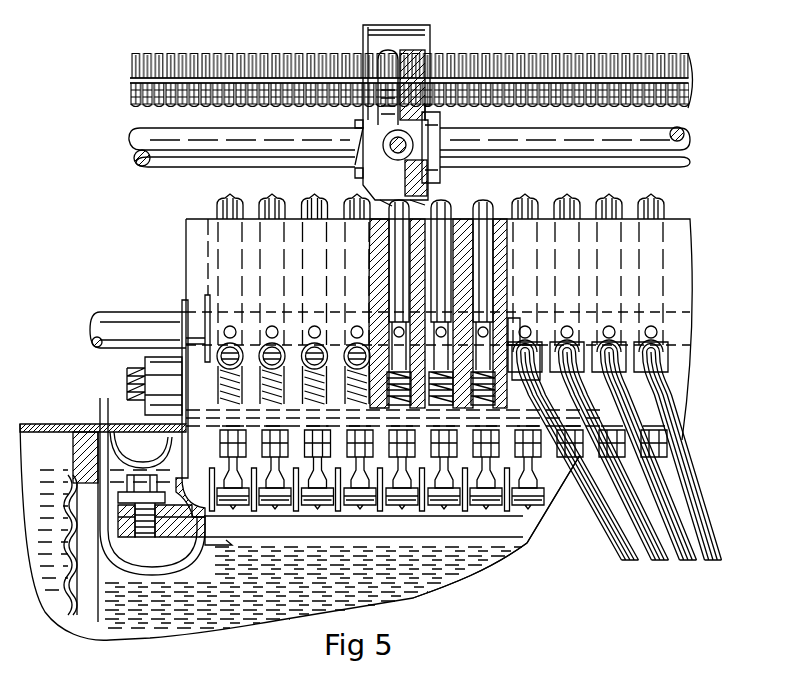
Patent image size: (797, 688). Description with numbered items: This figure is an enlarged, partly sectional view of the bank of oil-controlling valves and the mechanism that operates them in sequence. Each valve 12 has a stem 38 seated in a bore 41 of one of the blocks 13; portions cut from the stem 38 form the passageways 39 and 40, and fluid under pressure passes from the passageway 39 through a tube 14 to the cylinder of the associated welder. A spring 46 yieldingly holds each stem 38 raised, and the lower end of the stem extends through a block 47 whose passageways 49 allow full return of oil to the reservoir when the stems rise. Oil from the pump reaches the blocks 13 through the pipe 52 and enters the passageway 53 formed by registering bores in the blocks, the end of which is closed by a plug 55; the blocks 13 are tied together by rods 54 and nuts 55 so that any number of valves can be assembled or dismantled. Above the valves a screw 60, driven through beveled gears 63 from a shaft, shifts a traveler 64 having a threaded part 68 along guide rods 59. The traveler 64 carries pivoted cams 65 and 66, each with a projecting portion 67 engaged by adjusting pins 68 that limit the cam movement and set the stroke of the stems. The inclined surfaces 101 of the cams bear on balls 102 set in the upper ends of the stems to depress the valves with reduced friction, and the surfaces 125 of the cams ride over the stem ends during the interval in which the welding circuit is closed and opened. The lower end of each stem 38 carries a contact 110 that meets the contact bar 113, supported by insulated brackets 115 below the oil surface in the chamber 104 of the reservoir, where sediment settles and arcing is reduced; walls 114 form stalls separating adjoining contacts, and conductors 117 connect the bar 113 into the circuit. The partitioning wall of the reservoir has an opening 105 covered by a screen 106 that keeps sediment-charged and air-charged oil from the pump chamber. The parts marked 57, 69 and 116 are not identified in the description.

The valve 12 is at (619, 205).
The blocks 13 is at (683, 237).
The tube 14 is at (630, 565).
The stem 38 is at (508, 234).
The passageway 39 is at (507, 275).
The passageway 40 is at (550, 503).
The bore 41 is at (507, 258).
The spring 46 is at (508, 552).
The blocks 47 is at (533, 325).
The passageways 49 is at (214, 416).
The pipe 52 is at (113, 326).
The passageway 53 is at (206, 322).
The rods 54 is at (128, 379).
The plug 55 is at (156, 362).
The seat 57 is at (505, 300).
The rods 59 is at (692, 142).
The screw 60 is at (565, 56).
The beveled gears 63 is at (488, 58).
The traveler 64 is at (432, 30).
The cam 65 is at (478, 198).
The cam 66 is at (352, 172).
The projecting portion 67 is at (355, 126).
The threaded part 68 is at (384, 78).
The bracket arm 69 is at (370, 40).
The inclined surfaces 101 is at (380, 195).
The balls 102 is at (522, 203).
The chamber 104 is at (140, 612).
The opening 105 is at (98, 610).
The screen 106 is at (68, 596).
The contact 110 is at (362, 500).
The contact bar 113 is at (535, 522).
The walls 114 is at (344, 498).
The brackets 115 is at (184, 450).
The bracket 116 is at (184, 470).
The conductors 117 is at (100, 412).
The surfaces 125 is at (412, 165).